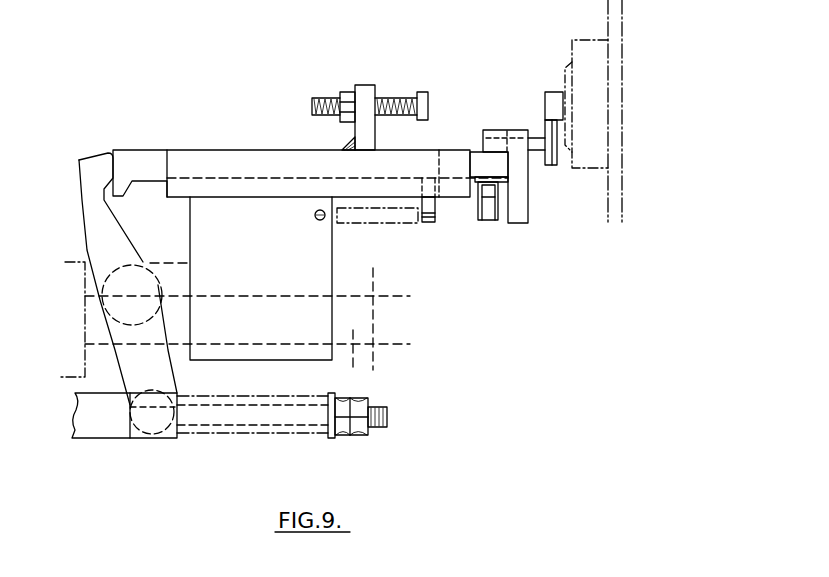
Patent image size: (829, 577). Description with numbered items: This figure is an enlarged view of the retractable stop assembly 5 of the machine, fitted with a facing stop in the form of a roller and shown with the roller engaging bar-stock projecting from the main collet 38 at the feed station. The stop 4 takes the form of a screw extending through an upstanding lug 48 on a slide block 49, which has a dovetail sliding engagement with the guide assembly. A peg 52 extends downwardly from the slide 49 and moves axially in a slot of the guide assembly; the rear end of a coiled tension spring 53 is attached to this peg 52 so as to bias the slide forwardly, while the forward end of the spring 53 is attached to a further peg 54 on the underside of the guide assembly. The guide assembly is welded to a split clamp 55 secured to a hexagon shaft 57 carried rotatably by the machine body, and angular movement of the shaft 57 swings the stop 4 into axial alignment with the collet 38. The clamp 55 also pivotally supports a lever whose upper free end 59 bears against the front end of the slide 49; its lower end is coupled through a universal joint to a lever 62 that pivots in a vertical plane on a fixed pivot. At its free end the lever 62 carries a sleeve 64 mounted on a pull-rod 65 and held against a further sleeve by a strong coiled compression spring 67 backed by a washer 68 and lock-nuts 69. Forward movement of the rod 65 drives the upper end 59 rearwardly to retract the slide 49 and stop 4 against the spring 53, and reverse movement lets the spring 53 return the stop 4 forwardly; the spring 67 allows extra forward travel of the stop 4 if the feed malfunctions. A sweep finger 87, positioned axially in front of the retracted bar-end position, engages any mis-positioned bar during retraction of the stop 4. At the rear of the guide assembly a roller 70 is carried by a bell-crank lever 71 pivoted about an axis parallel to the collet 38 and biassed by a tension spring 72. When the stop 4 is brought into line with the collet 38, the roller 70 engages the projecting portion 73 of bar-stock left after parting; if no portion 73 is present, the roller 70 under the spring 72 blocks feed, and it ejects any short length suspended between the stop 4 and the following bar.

The stop 4 is at (420, 100).
The stop assembly 5 is at (253, 114).
The main collet 38 is at (588, 62).
The upstanding lug 48 is at (367, 135).
The slide block 49 is at (143, 166).
The peg 52 is at (430, 223).
The coiled tension spring 53 is at (370, 216).
The further peg 54 is at (316, 219).
The split clamp 55 is at (296, 350).
The hexagon shaft 57 is at (247, 330).
The upper free end 59 is at (93, 166).
The lever 62 is at (167, 373).
The sleeve 64 is at (155, 430).
The pull-rod 65 is at (98, 427).
The coiled compression spring 67 is at (228, 430).
The washer 68 is at (330, 438).
The lock-nuts 69 is at (350, 437).
The roller 70 is at (550, 163).
The bell-crank lever 71 is at (518, 218).
The tension spring 72 is at (485, 203).
The projecting portion of bar-stock 73 is at (555, 107).
The sweep finger 87 is at (475, 152).